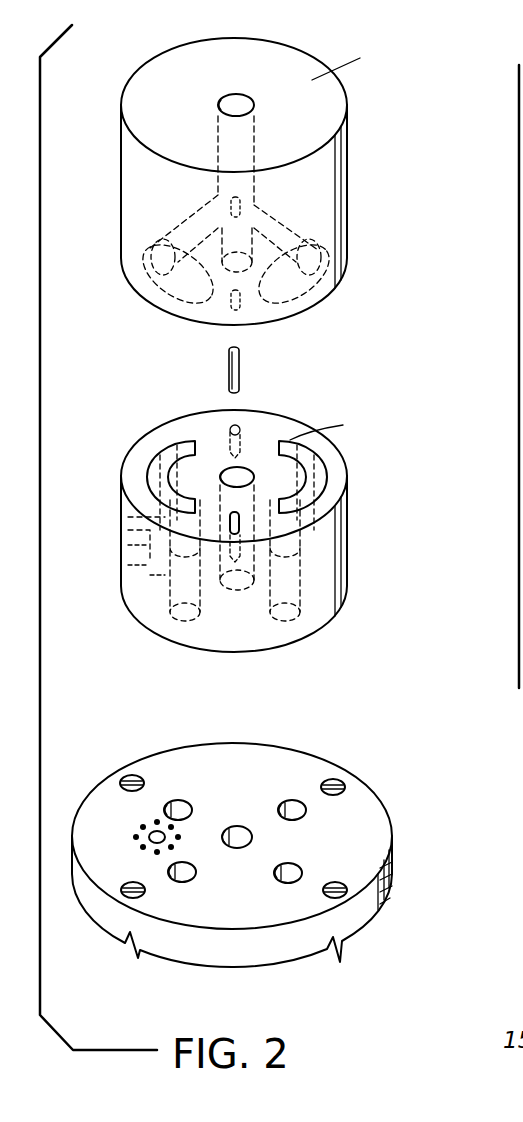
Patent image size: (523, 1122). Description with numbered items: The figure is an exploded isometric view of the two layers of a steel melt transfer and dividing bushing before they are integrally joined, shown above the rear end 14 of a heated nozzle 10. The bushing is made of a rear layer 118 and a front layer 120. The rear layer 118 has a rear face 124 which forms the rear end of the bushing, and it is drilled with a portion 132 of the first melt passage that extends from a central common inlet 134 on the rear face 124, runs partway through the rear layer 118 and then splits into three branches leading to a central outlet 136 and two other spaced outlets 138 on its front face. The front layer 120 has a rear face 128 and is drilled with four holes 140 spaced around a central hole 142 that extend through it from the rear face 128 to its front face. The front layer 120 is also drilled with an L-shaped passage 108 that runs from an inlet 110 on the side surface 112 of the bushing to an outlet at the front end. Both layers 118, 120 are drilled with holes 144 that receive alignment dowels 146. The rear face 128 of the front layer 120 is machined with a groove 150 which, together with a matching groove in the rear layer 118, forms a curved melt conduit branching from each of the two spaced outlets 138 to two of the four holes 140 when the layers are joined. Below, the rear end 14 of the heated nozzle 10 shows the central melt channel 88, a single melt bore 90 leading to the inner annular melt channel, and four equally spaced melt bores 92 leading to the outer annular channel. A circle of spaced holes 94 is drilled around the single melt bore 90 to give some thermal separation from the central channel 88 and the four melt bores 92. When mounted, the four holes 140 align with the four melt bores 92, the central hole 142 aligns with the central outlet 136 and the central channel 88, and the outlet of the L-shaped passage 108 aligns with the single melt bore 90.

The heated nozzle 10 is at (393, 885).
The rear end 14 is at (362, 825).
The central melt channel 88 is at (237, 830).
The single melt bore 90 is at (155, 838).
The melt bores 92 is at (292, 803).
The spaced holes 94 is at (157, 832).
The L-shaped passage 108 is at (128, 555).
The inlet 110 is at (128, 525).
The side surface 112 is at (128, 490).
The rear layer 118 is at (330, 172).
The front layer 120 is at (340, 540).
The rear face 124 is at (359, 62).
The rear face 128 is at (340, 425).
The portion of the first melt passage 132 is at (257, 212).
The central common inlet 134 is at (240, 100).
The central outlet 136 is at (225, 303).
The spaced outlets 138 is at (150, 273).
The holes 140 is at (292, 455).
The central hole 142 is at (232, 472).
The holes 144 is at (247, 313).
The alignment dowels 146 is at (240, 372).
The groove 150 is at (155, 470).